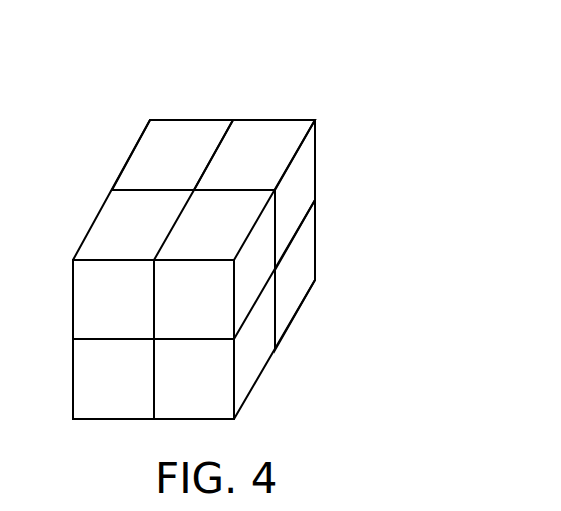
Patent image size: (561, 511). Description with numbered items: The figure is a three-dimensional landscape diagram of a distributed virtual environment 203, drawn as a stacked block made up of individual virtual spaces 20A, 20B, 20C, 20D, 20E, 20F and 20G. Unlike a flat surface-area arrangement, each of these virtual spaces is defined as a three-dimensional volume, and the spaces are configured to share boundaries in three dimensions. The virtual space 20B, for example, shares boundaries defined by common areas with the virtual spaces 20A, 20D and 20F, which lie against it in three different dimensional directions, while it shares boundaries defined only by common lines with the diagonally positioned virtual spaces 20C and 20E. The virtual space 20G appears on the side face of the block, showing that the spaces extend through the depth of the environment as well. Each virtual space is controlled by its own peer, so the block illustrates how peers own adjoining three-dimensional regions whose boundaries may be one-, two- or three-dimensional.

The distributed virtual environment 203 is at (258, 235).
The virtual space 20A is at (113, 299).
The virtual space 20B is at (194, 299).
The virtual space 20C is at (113, 379).
The virtual space 20D is at (194, 379).
The virtual space 20E is at (172, 155).
The virtual space 20F is at (254, 155).
The virtual space 20G is at (293, 275).